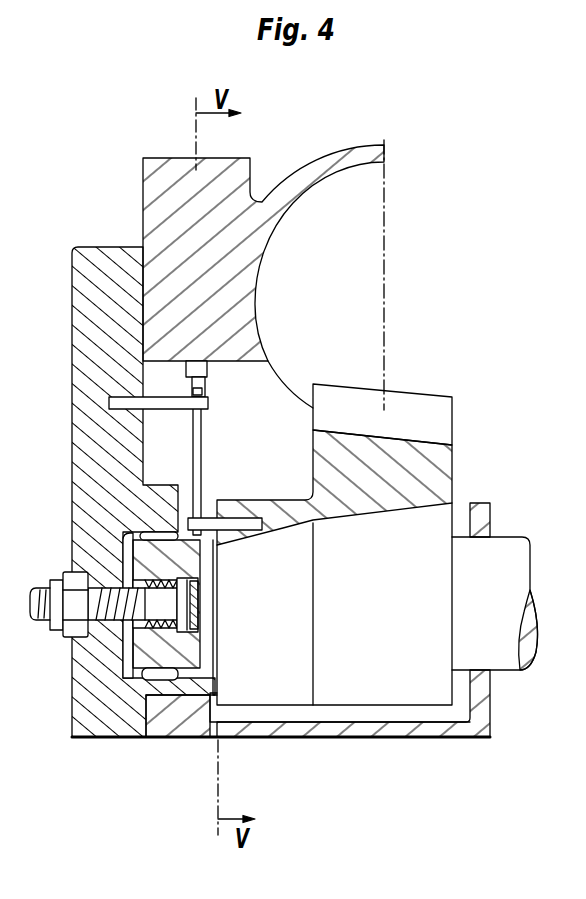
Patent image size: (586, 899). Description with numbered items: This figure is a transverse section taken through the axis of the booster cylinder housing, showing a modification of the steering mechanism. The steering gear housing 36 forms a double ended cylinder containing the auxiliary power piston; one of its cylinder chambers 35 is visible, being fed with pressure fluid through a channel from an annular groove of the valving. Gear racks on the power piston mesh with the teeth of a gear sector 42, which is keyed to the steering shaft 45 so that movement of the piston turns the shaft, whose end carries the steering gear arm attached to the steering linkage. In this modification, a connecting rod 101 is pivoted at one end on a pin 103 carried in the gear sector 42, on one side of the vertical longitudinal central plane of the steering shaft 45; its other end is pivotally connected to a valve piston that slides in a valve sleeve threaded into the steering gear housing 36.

The gear sector 42 is at (440, 467).
The con rod 101 is at (203, 447).
The pin 103 is at (223, 529).
The steering shaft 45 is at (194, 654).
The cylinder chamber 35 is at (344, 718).
The steering gear housing 36 is at (417, 730).